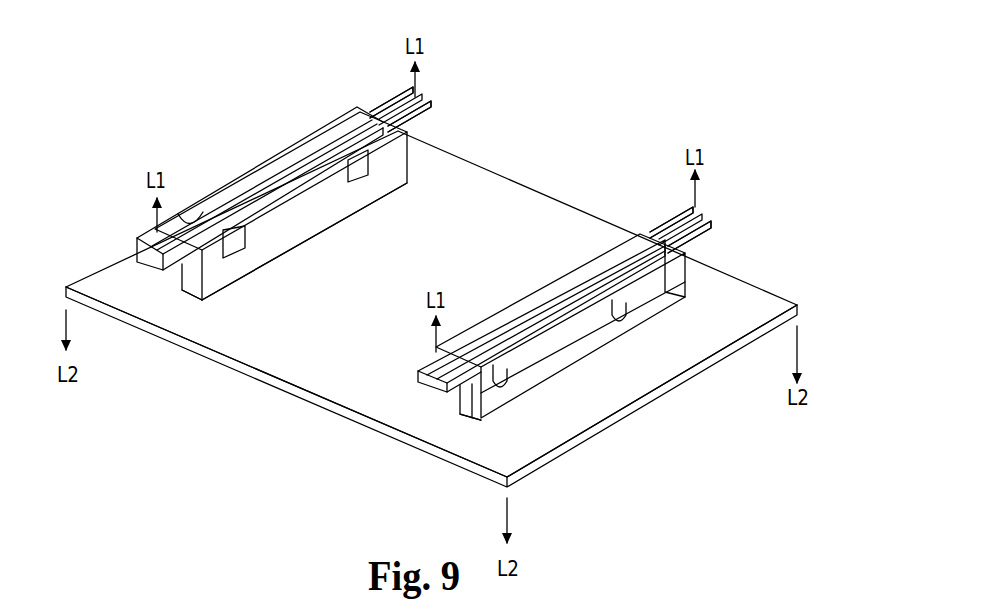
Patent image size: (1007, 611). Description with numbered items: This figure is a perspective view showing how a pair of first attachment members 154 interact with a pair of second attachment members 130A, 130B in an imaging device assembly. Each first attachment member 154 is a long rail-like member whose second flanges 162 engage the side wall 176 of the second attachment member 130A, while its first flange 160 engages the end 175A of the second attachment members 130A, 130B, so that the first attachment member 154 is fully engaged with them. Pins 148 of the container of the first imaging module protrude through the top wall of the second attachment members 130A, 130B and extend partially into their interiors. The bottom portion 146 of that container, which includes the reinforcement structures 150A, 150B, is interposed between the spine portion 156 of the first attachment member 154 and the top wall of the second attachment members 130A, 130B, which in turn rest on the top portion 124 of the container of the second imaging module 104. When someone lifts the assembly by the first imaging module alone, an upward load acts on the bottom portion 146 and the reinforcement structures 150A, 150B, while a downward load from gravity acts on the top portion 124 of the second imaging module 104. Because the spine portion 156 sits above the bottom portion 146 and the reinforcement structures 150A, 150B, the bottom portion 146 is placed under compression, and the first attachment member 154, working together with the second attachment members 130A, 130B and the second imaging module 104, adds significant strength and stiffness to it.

The second imaging module 104 is at (556, 195).
The top portion 124 is at (485, 221).
The second attachment member 130A is at (296, 243).
The second attachment member 130B is at (418, 168).
The bottom portion 146 is at (432, 106).
The pins 148 is at (620, 313).
The reinforcement structure 150A is at (665, 214).
The reinforcement structure 150B is at (392, 104).
The first attachment member 154 is at (212, 204).
The spine portion 156 is at (259, 178).
The first flange 160 is at (188, 265).
The second flange 162 is at (360, 168).
The end 175A is at (195, 293).
The side wall 176 is at (332, 216).